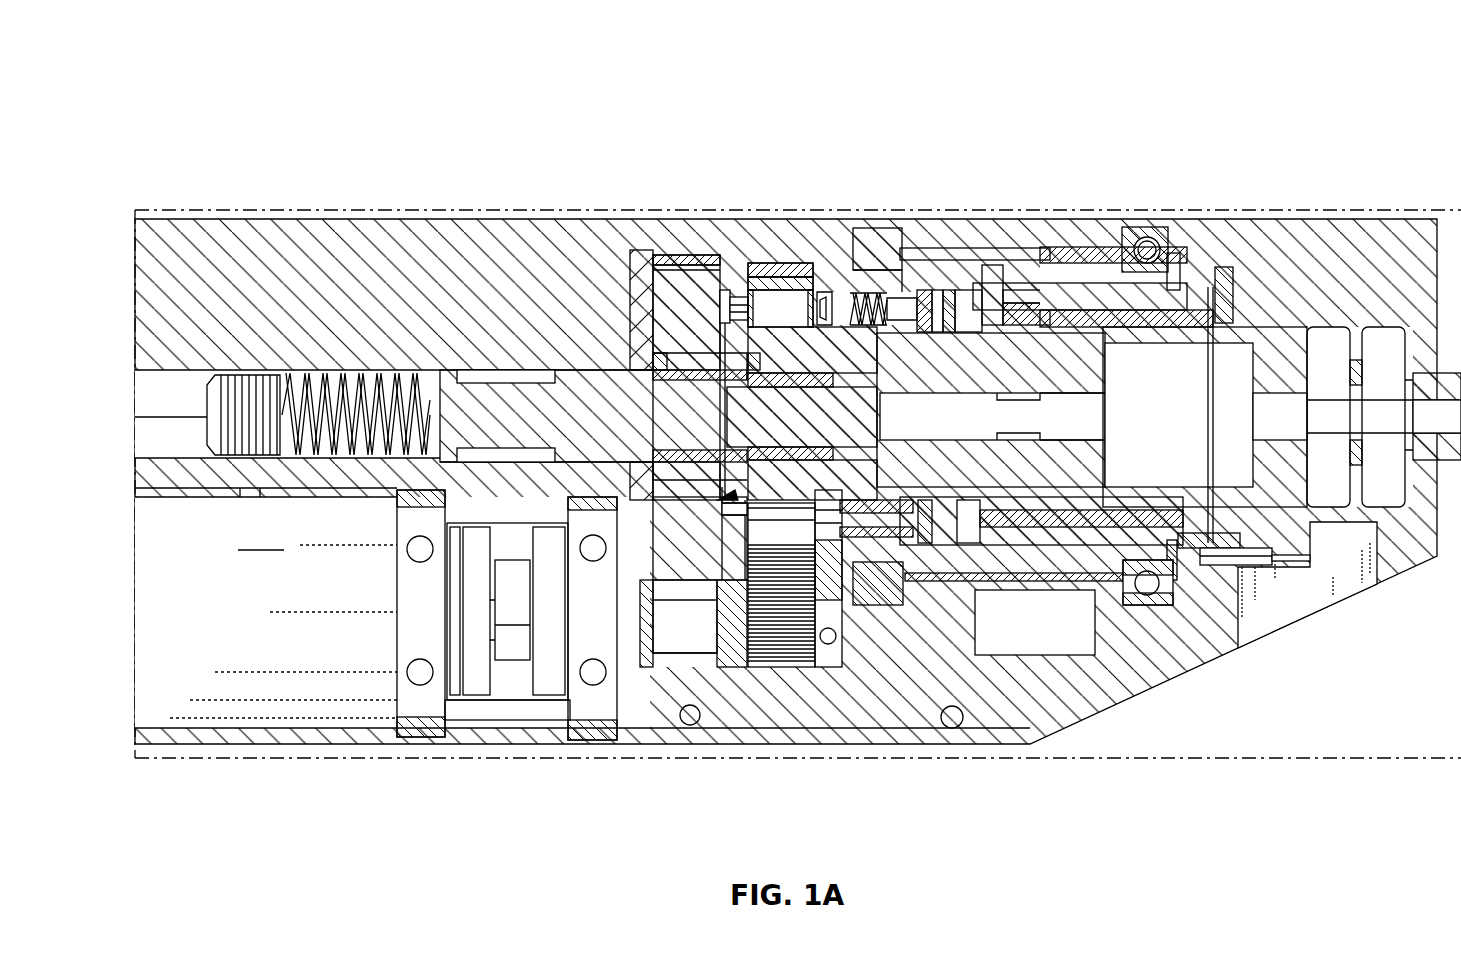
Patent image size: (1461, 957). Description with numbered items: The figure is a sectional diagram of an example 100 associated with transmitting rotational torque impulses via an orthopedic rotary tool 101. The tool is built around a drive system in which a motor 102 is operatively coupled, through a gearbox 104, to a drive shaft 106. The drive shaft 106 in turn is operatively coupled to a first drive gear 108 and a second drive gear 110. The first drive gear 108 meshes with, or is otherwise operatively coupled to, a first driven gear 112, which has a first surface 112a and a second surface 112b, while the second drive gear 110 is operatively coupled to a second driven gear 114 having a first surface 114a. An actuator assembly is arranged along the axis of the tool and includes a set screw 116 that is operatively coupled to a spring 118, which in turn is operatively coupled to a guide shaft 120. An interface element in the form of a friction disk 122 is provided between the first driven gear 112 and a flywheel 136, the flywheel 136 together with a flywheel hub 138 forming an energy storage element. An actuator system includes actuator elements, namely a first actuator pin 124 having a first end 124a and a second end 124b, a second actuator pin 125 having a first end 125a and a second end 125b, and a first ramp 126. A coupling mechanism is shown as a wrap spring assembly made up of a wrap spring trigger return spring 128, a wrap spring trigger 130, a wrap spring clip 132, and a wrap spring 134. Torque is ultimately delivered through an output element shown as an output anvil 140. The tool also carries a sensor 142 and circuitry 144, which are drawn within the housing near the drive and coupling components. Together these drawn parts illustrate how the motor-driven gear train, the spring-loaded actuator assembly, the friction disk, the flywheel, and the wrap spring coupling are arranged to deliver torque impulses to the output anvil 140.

The example 100 is at (192, 48).
The orthopedic rotary tool 101 is at (1108, 100).
The motor 102 is at (798, 484).
The gearbox 104 is at (403, 688).
The drive shaft 106 is at (682, 608).
The first drive gear 108 is at (807, 667).
The second drive gear 110 is at (670, 652).
The first driven gear 112 is at (822, 312).
The first surface 112a is at (770, 280).
The second surface 112b is at (824, 310).
The second driven gear 114 is at (717, 308).
The first surface 114a is at (727, 292).
The set screw 116 is at (252, 363).
The spring 118 is at (340, 363).
The guide shaft 120 is at (482, 407).
The friction disk 122 is at (1053, 463).
The first actuator pin 124 is at (735, 520).
The first end 124a is at (745, 513).
The second end 124b is at (825, 520).
The second actuator pin 125 is at (738, 300).
The first end 125a is at (668, 278).
The second end 125b is at (883, 293).
The first ramp 126 is at (726, 493).
The wrap spring trigger return spring 128 is at (925, 300).
The wrap spring trigger 130 is at (862, 513).
The wrap spring clip 132 is at (1125, 240).
The wrap spring 134 is at (1220, 560).
The flywheel 136 is at (960, 305).
The flywheel hub 138 is at (1153, 532).
The output anvil 140 is at (1283, 310).
The sensor 142 is at (1277, 557).
The circuitry 144 is at (1055, 650).